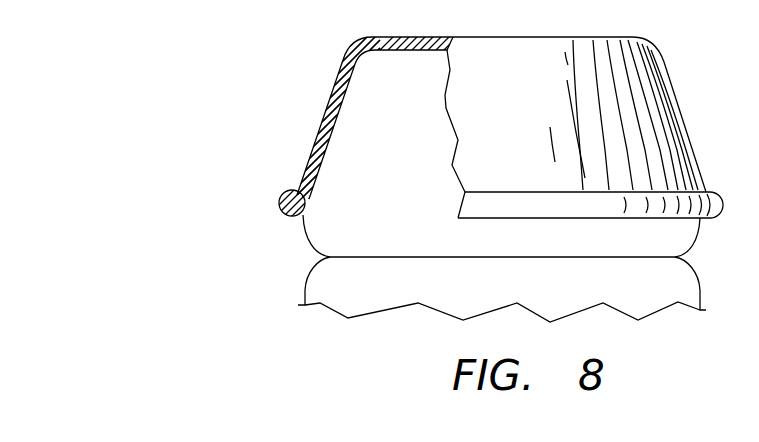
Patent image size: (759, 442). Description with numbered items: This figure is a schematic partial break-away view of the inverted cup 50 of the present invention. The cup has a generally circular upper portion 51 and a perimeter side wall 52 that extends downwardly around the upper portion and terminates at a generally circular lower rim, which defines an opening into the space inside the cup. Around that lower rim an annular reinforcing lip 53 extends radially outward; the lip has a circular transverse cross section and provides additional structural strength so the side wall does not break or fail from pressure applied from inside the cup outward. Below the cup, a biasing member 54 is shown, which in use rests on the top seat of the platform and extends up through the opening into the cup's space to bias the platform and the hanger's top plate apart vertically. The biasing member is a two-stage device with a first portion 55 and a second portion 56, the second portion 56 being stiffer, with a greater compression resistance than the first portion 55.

The inverted cup 50 is at (268, 142).
The upper portion 51 is at (394, 37).
The perimeter side wall 52 is at (326, 111).
The annular reinforcing lip 53 is at (281, 207).
The biasing member 54 is at (297, 275).
The first portion 55 is at (372, 228).
The second portion 56 is at (439, 292).